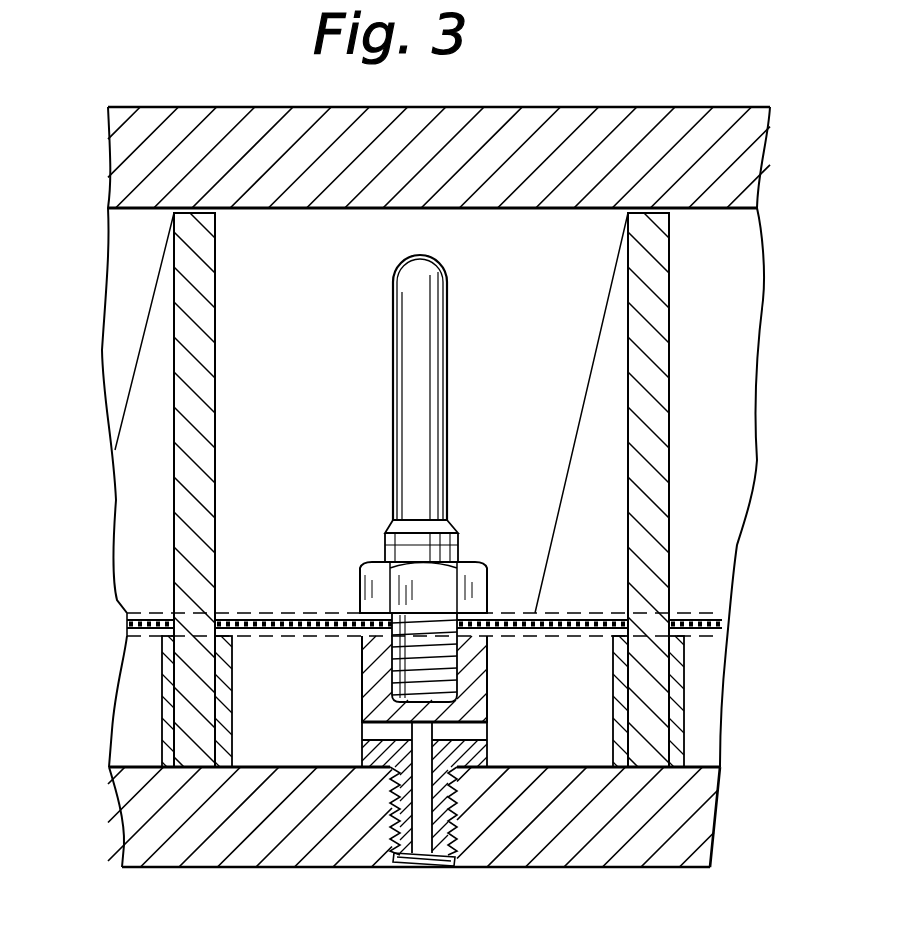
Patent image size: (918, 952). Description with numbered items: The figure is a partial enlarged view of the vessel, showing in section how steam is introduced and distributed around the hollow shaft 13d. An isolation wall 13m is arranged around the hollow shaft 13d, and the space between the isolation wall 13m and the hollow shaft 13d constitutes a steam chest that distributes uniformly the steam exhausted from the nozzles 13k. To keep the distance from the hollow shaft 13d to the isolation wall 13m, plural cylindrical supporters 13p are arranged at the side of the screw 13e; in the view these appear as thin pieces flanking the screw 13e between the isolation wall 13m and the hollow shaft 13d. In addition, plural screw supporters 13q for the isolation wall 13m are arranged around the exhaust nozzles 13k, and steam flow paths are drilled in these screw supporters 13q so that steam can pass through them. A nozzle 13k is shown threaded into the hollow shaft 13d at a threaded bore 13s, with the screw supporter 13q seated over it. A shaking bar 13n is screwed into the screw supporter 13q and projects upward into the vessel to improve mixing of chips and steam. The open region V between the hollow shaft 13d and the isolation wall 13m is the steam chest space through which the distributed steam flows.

The screw 13e is at (181, 258).
The shaking bar 13n is at (449, 424).
The cylindrical supporter 13p is at (234, 645).
The isolation wall 13m is at (737, 612).
The screw supporter 13q is at (362, 698).
The hollow shaft 13d is at (126, 810).
The threaded hole 13s is at (418, 800).
The nozzle 13k is at (425, 867).
The space V is at (560, 708).